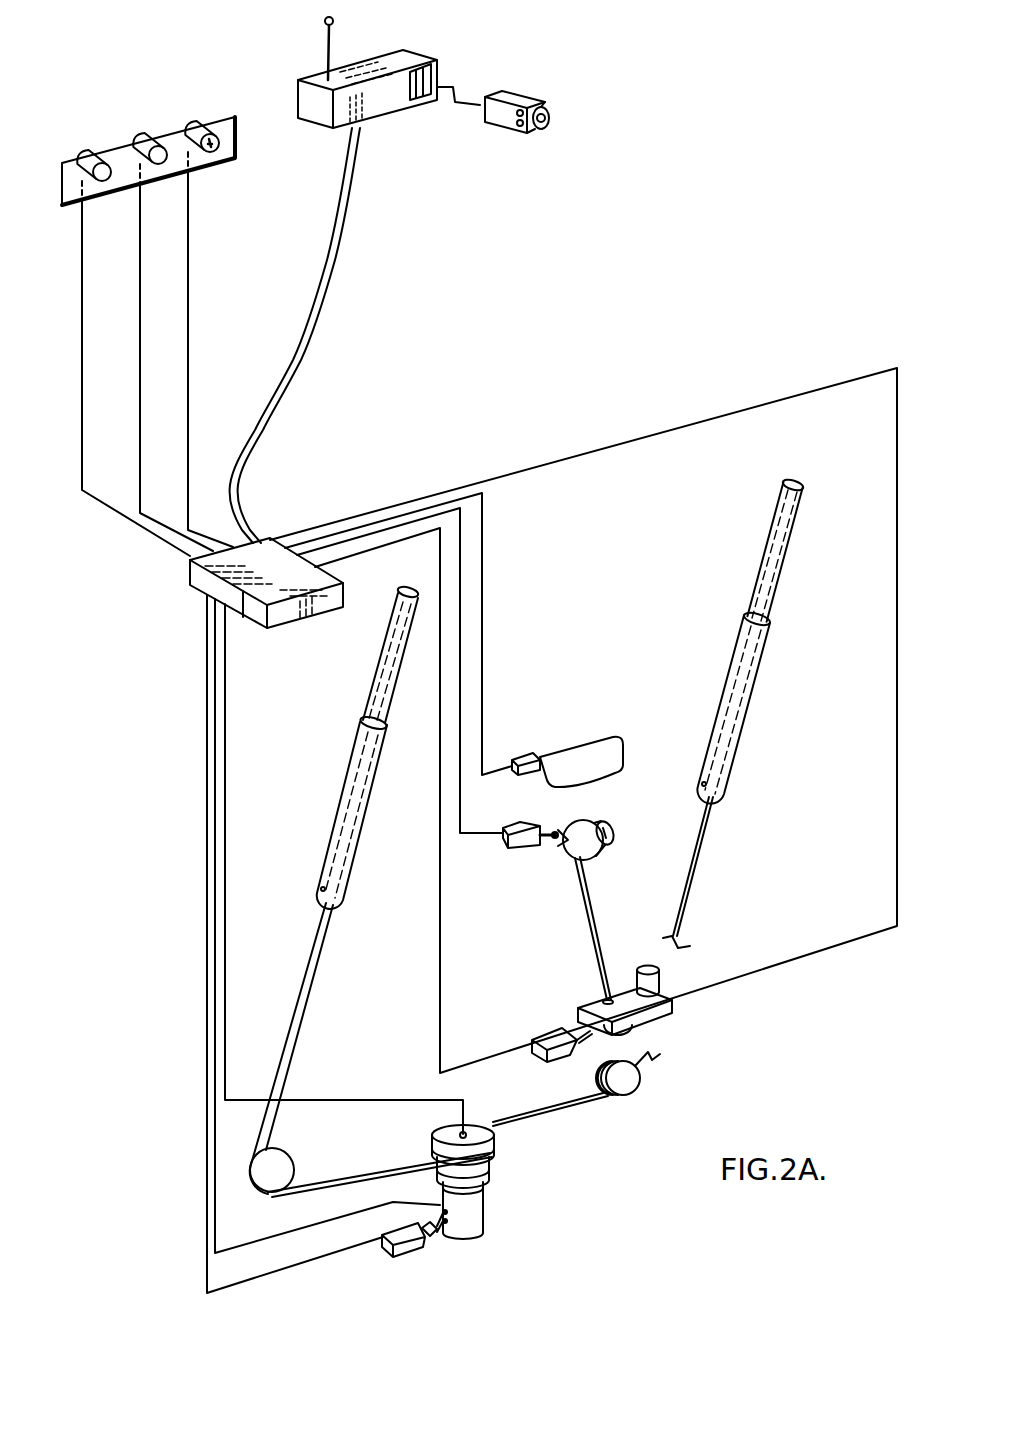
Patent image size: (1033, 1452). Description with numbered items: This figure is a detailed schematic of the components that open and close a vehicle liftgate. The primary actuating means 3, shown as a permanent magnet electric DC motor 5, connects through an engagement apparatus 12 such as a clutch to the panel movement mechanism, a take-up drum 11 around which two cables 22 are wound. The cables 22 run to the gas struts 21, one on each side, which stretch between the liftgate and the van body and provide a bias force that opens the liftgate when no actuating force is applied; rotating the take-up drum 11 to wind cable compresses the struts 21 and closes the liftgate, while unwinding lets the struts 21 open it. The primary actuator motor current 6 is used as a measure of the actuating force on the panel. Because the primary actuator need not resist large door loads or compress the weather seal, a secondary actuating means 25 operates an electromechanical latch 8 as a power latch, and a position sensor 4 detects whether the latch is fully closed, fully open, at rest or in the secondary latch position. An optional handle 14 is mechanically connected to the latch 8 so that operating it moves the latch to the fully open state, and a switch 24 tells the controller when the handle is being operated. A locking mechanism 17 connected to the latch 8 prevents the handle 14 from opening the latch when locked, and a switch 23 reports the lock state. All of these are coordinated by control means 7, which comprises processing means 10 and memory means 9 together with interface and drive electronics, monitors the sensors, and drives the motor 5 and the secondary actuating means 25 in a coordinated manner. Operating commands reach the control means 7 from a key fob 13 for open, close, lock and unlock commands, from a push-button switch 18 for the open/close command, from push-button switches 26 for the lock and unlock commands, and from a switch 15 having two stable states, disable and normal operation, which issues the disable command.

The primary actuating means 3 is at (430, 1240).
The position sensor 4 is at (548, 1033).
The motor 5 is at (470, 1228).
The primary actuator motor current 6 is at (387, 1255).
The control means 7 is at (244, 549).
The electromechanical latch 8 is at (653, 1012).
The memory means 9 is at (316, 578).
The processing means 10 is at (263, 557).
The take-up drum 11 is at (443, 1128).
The engagement apparatus 12 is at (497, 1187).
The key fob 13 is at (500, 95).
The handle 14 is at (597, 737).
The disable switch 15 is at (197, 127).
The locking mechanism 17 is at (583, 807).
The push-button switch 18 is at (143, 140).
The gas struts 21 is at (353, 858).
The cables 22 is at (567, 1105).
The lock switch 23 is at (518, 850).
The handle switch 24 is at (528, 753).
The secondary actuating means 25 is at (678, 1006).
The push-button switches 26 is at (87, 156).